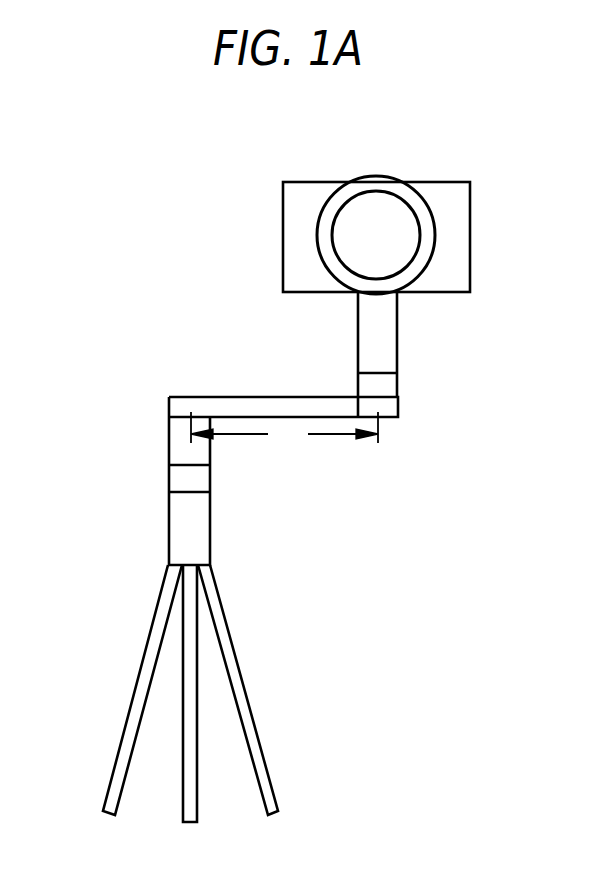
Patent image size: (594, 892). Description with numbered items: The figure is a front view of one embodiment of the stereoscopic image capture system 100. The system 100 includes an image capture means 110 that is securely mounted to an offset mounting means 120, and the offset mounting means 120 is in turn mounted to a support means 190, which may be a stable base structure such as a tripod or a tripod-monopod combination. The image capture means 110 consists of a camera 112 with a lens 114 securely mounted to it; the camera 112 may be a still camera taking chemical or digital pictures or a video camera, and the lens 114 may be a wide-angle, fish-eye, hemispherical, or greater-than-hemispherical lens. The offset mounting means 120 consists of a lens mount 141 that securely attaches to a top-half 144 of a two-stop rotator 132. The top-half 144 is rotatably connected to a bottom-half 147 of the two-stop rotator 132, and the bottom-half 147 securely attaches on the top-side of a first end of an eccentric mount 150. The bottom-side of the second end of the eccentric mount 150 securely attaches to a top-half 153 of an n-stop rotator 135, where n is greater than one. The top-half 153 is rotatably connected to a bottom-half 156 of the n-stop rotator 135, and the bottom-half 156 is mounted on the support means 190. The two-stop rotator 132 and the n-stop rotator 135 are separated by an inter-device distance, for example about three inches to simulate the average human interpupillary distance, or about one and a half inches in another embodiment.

The stereoscopic image capture system 100 is at (162, 129).
The image capture means 110 is at (328, 173).
The camera 112 is at (463, 219).
The lens 114 is at (392, 233).
The lens mount 141 is at (386, 183).
The two-stop rotator 132 is at (583, 360).
The top-half of two-stop rotator 144 is at (385, 323).
The bottom-half of two-stop rotator 147 is at (385, 386).
The eccentric mount 150 is at (352, 404).
The offset mounting means 120 is at (210, 386).
The n-stop rotator 135 is at (82, 473).
The top-half of n-stop rotator 153 is at (183, 448).
The bottom-half of n-stop rotator 156 is at (183, 482).
The support means 190 is at (192, 543).